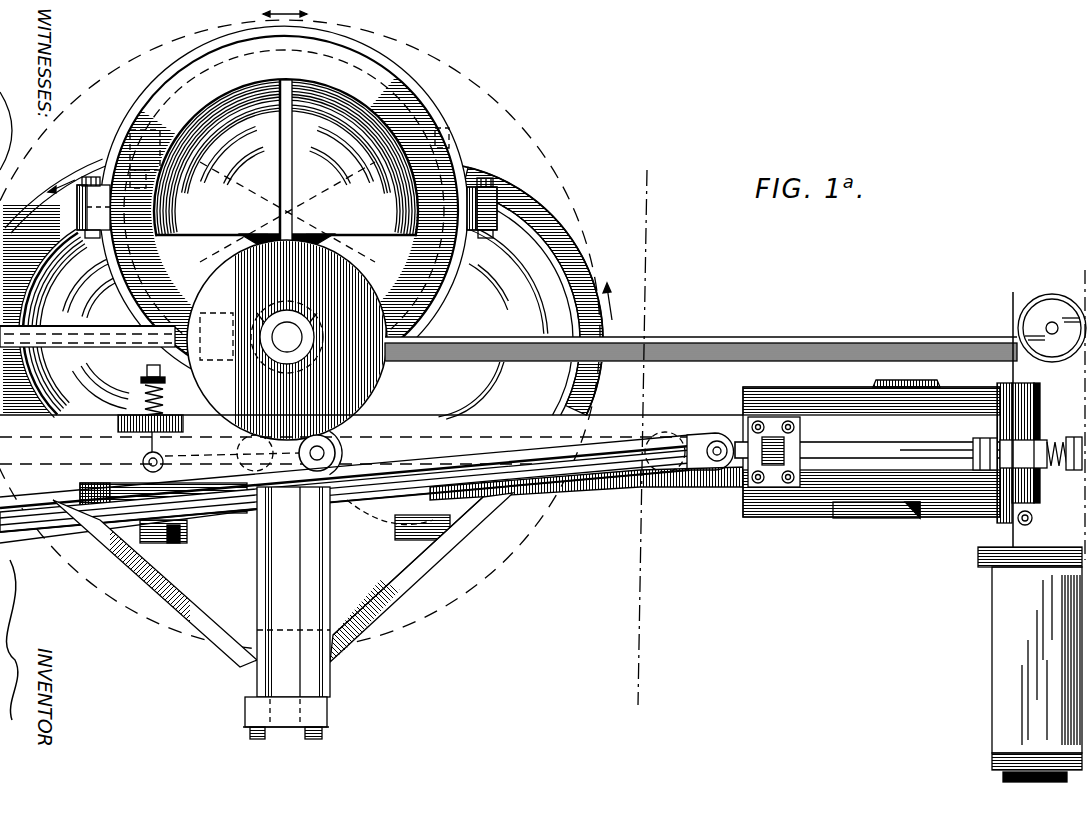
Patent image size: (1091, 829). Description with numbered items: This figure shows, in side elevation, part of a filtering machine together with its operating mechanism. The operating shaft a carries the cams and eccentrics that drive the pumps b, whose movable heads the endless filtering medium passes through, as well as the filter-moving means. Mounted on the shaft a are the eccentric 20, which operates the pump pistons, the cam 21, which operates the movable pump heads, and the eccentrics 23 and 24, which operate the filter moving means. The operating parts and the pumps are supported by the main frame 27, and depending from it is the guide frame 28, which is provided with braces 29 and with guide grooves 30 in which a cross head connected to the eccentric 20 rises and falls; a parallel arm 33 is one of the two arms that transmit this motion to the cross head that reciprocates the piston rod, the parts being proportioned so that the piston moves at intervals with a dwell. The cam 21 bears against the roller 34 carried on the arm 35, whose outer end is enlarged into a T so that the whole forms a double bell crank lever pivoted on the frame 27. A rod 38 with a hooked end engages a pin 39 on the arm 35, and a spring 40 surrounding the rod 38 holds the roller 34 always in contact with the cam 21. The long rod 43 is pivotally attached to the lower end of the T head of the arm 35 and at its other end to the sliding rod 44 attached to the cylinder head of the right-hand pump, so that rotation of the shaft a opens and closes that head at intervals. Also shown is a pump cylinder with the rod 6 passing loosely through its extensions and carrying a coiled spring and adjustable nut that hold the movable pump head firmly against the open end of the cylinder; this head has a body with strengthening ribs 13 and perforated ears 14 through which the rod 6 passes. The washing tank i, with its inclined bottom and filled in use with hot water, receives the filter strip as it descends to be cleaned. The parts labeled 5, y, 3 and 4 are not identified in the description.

The eccentric 20 is at (413, 98).
The eccentric 23 is at (66, 183).
The base 5 is at (275, 740).
The cam 21 is at (241, 264).
The operating shaft a is at (305, 325).
The eccentric 24 is at (590, 250).
The rod y is at (855, 338).
The rod 6 is at (648, 426).
The main frame 27 is at (685, 424).
The cylinder 3 is at (871, 449).
The pumps b is at (867, 452).
The sliding rod 44 is at (950, 435).
The collar 4 is at (981, 446).
The perforated ears 14 is at (1036, 446).
The strengthening ribs 13 is at (1048, 494).
The washing tank i is at (1003, 607).
The spring 40 is at (140, 392).
The rod 38 is at (140, 441).
The pin 39 is at (232, 465).
The arm 35 is at (165, 508).
The parallel arm 33 is at (371, 439).
The roller 34 is at (380, 451).
The long rod 43 is at (600, 480).
The guide frame 28 is at (330, 557).
The braces 29 is at (420, 565).
The guide grooves 30 is at (277, 568).